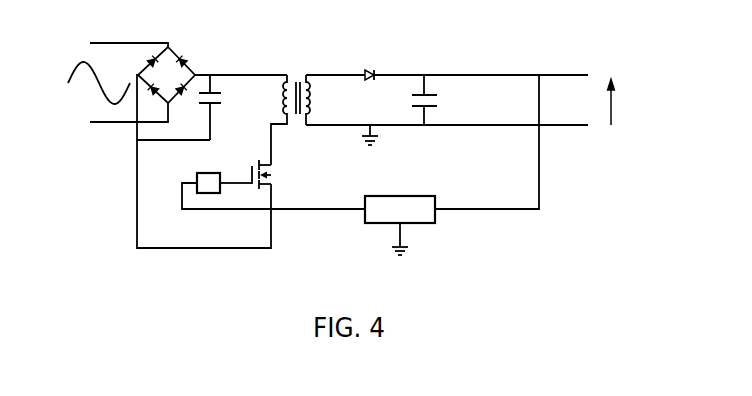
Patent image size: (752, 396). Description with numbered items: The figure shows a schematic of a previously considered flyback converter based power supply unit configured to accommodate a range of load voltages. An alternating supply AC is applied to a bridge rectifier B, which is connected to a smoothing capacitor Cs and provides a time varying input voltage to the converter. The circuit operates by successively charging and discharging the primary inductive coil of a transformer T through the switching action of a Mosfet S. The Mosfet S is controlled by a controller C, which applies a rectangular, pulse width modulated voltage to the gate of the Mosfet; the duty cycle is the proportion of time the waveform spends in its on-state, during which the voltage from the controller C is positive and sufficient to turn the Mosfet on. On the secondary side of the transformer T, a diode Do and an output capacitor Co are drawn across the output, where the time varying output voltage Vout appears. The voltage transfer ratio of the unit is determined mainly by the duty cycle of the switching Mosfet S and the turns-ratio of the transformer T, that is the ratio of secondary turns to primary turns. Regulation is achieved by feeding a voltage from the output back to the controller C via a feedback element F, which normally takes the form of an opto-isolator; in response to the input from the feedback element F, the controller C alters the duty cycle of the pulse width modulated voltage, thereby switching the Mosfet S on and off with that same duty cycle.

The AC power source AC is at (83, 83).
The bridge rectifier B is at (169, 73).
The smoothing capacitor Cs is at (221, 107).
The transformer T is at (290, 109).
The output diode Do is at (367, 63).
The output capacitor Co is at (439, 100).
The output voltage Vout is at (631, 102).
The feedback element F is at (400, 214).
The controller C is at (208, 173).
The Mosfet S is at (270, 177).